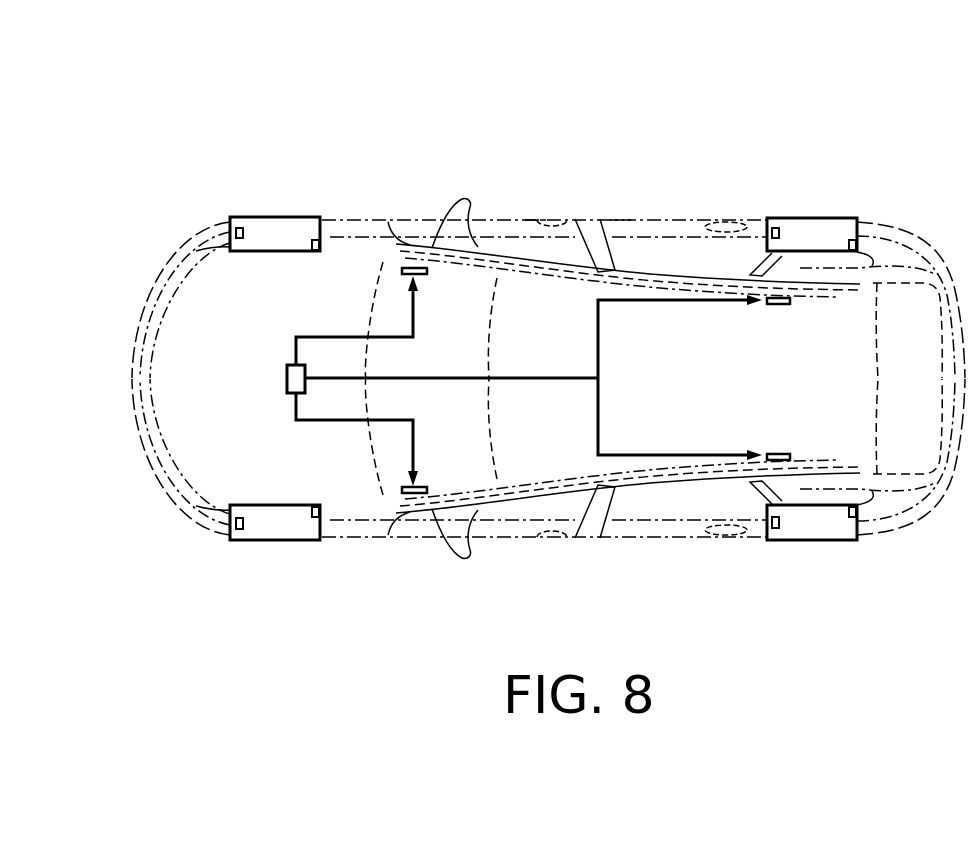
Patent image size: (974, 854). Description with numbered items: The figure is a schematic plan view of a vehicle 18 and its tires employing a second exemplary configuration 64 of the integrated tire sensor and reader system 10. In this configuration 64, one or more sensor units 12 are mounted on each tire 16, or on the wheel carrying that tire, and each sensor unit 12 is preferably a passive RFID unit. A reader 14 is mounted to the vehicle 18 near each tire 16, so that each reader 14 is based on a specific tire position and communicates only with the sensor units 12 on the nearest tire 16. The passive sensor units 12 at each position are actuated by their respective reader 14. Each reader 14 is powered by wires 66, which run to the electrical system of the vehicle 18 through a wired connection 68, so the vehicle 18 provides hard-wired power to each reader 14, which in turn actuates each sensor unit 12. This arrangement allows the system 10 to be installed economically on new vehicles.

The integrated tire sensor and reader system 10 is at (634, 126).
The sensor unit 12 is at (239, 228).
The reader 14 is at (428, 272).
The tire 16 is at (288, 206).
The vehicle 18 is at (623, 210).
The second exemplary configuration 64 is at (540, 188).
The wires 66 is at (348, 336).
The wired connection 68 is at (287, 378).